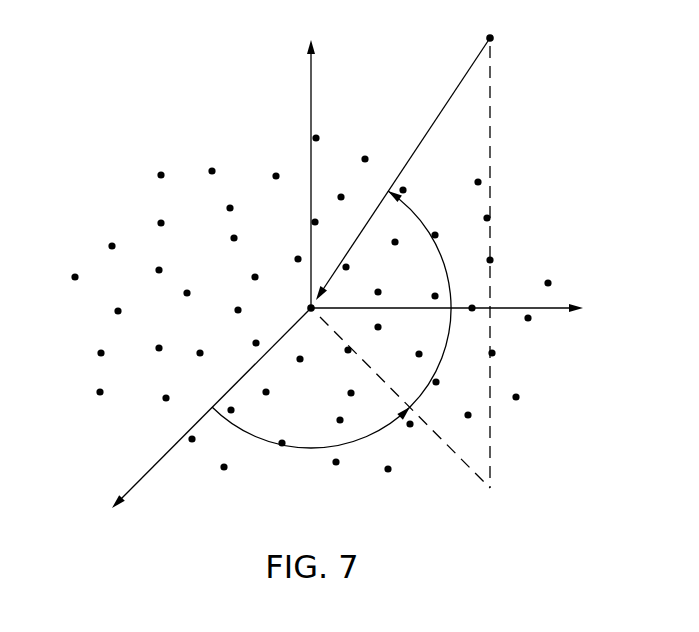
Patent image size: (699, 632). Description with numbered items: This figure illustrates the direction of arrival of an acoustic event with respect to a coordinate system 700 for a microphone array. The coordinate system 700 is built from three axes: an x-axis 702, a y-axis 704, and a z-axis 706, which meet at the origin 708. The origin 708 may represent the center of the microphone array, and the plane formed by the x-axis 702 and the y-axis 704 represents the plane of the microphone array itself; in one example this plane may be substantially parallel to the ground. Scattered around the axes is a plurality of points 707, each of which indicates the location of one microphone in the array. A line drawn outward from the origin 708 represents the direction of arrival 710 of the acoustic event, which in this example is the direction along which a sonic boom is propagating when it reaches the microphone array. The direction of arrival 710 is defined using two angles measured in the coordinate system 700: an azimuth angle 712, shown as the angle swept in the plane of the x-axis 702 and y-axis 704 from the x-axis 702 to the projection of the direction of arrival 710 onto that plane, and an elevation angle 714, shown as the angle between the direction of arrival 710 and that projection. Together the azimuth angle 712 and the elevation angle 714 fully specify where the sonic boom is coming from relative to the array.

The coordinate system 700 is at (152, 66).
The x-axis 702 is at (152, 467).
The y-axis 704 is at (551, 313).
The z-axis 706 is at (310, 93).
The plurality of points 707 is at (68, 266).
The origin 708 is at (303, 300).
The direction of arrival 710 is at (446, 101).
The azimuth angle 712 is at (352, 449).
The elevation angle 714 is at (423, 215).